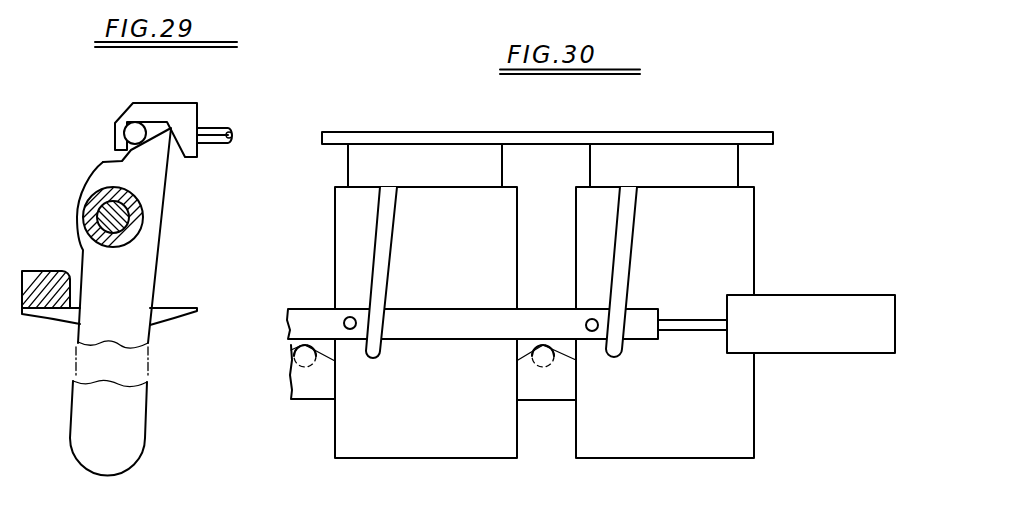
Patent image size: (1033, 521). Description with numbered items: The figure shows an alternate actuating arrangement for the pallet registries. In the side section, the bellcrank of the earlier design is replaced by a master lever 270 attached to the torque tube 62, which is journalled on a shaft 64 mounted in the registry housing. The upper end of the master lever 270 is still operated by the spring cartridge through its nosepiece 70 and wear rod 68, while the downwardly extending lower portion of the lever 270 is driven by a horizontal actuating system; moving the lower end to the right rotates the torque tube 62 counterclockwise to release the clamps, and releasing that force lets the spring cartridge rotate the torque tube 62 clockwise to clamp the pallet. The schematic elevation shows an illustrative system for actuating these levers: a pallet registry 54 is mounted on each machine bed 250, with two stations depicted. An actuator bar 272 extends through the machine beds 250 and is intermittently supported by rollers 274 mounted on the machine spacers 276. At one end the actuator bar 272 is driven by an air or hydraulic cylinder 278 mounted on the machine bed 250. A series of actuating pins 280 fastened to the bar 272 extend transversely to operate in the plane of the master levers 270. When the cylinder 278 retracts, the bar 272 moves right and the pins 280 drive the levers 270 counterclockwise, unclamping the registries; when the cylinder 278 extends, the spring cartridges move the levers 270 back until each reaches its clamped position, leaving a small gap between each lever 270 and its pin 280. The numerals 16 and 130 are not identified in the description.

In FIG. 29, the pin 16 is at (212, 146).
In FIG. 30, the pallet registry 54 is at (348, 165).
In FIG. 29, the torque tube 62 is at (130, 224).
In FIG. 29, the shaft 64 is at (110, 215).
In FIG. 29, the wear rod 68 is at (133, 134).
In FIG. 29, the nosepiece 70 is at (126, 113).
In FIG. 30, the mounting plate 130 is at (764, 130).
In FIG. 30, the machine bed 250 is at (335, 249).
In FIG. 29, the master lever 270 is at (157, 279).
In FIG. 30, the master lever 270 is at (390, 262).
In FIG. 30, the actuator bar 272 is at (445, 340).
In FIG. 30, the rollers 274 is at (290, 348).
In FIG. 30, the machine spacers 276 is at (307, 400).
In FIG. 30, the cylinder 278 is at (808, 353).
In FIG. 30, the actuating pins 280 is at (343, 322).